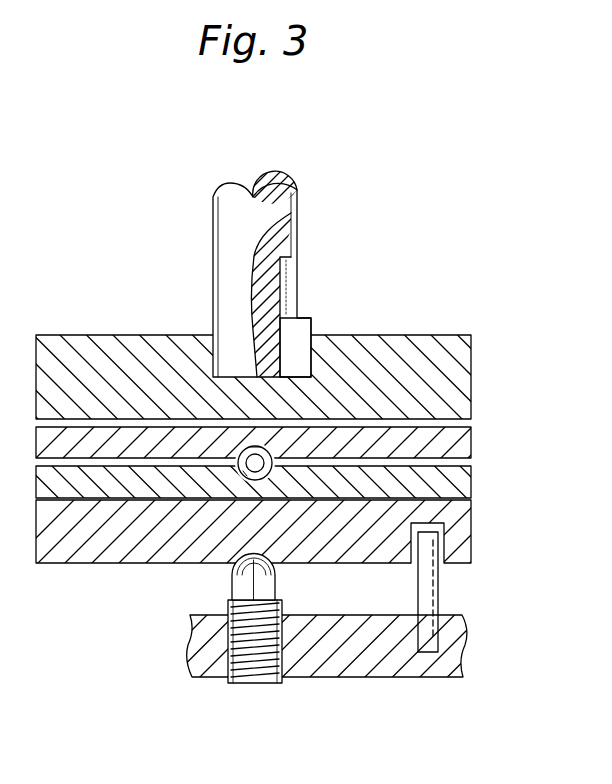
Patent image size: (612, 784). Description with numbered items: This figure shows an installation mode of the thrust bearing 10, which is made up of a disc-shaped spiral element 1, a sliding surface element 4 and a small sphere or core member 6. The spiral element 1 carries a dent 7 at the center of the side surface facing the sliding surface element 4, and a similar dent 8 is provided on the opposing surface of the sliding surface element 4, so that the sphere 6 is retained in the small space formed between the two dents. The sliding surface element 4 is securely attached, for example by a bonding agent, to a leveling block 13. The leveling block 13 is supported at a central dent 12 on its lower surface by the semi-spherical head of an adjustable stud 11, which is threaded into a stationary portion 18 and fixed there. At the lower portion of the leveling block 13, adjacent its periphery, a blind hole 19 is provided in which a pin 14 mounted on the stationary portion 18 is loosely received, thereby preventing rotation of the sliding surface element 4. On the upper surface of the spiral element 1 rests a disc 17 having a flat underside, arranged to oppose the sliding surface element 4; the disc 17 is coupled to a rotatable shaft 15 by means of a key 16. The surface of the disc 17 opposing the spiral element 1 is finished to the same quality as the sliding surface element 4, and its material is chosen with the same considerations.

The spiral element 1 is at (462, 437).
The sliding surface element 4 is at (270, 482).
The sphere 6 is at (252, 470).
The dent 7 is at (258, 447).
The dent 8 is at (241, 474).
The thrust bearing 10 is at (296, 455).
The adjustable stud 11 is at (248, 680).
The central dent 12 is at (255, 571).
The leveling block 13 is at (468, 540).
The pin 14 is at (440, 586).
The rotatable shaft 15 is at (297, 205).
The key 16 is at (299, 322).
The disc 17 is at (405, 343).
The stationary portion 18 is at (455, 661).
The blind hole 19 is at (447, 524).